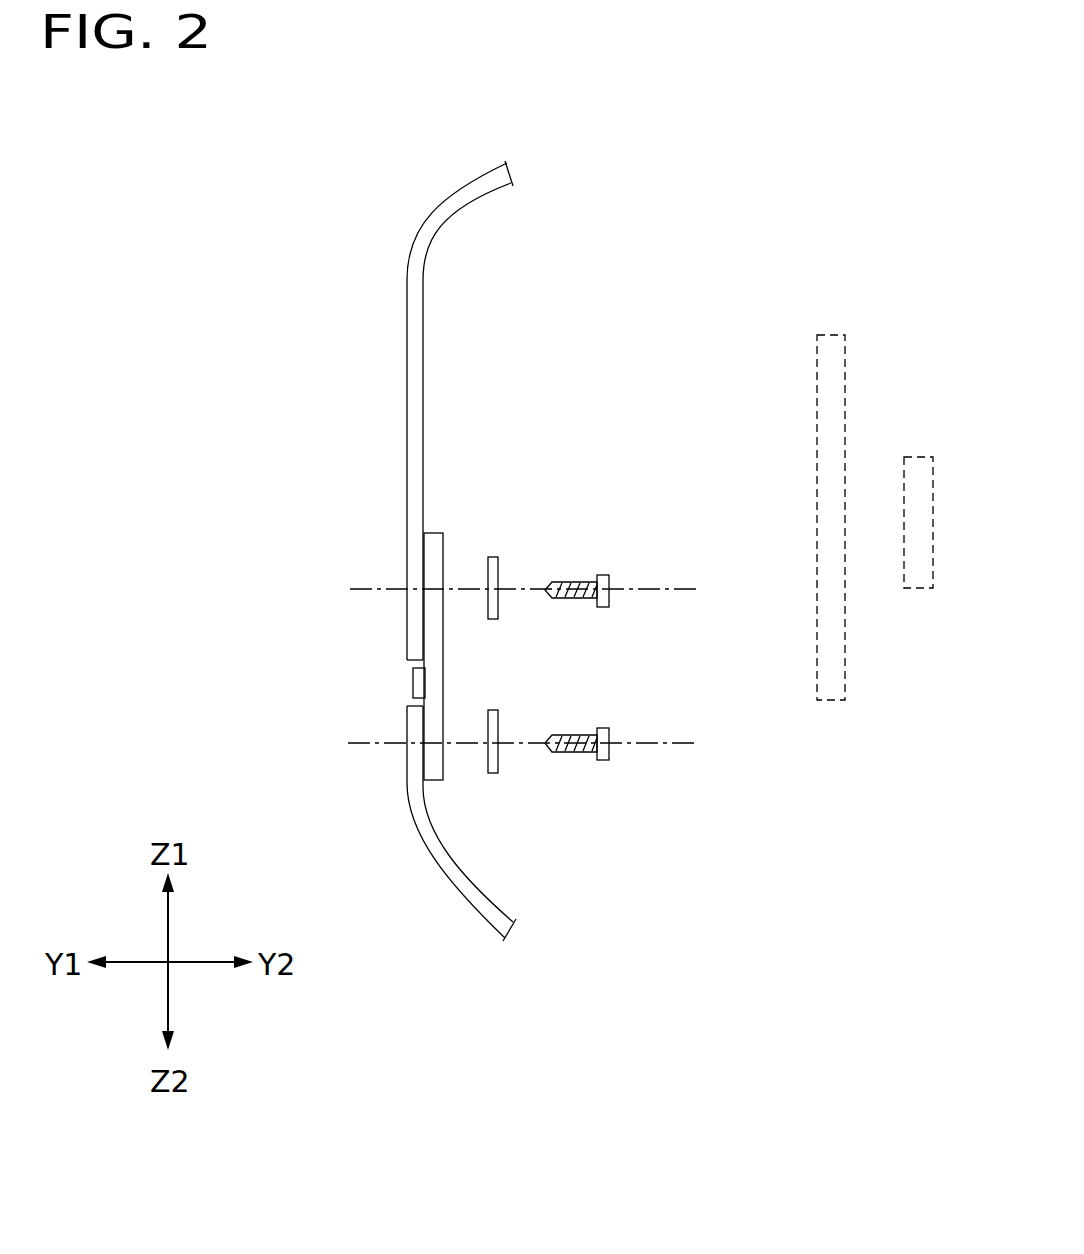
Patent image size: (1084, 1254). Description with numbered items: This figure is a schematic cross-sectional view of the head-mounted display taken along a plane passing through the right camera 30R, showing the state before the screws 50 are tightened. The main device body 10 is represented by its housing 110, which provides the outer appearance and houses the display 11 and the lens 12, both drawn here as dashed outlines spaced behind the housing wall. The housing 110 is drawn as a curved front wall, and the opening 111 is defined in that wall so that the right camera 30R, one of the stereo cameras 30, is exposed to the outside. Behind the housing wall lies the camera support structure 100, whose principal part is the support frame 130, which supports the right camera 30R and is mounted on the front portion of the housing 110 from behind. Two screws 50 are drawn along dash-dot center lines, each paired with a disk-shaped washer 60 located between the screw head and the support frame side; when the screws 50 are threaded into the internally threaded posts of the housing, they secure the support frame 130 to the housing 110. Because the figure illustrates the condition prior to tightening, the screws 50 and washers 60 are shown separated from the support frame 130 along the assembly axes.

The main device body 10 is at (885, 383).
The display 11 is at (832, 335).
The lens 12 is at (918, 457).
The camera support structure 100 is at (392, 551).
The housing 110 is at (407, 468).
The opening 111 is at (407, 783).
The support frame 130 is at (443, 765).
The right camera 30R is at (333, 675).
The stereo cameras 30 is at (413, 683).
The washer 60 is at (496, 557).
The screw 50 is at (600, 575).